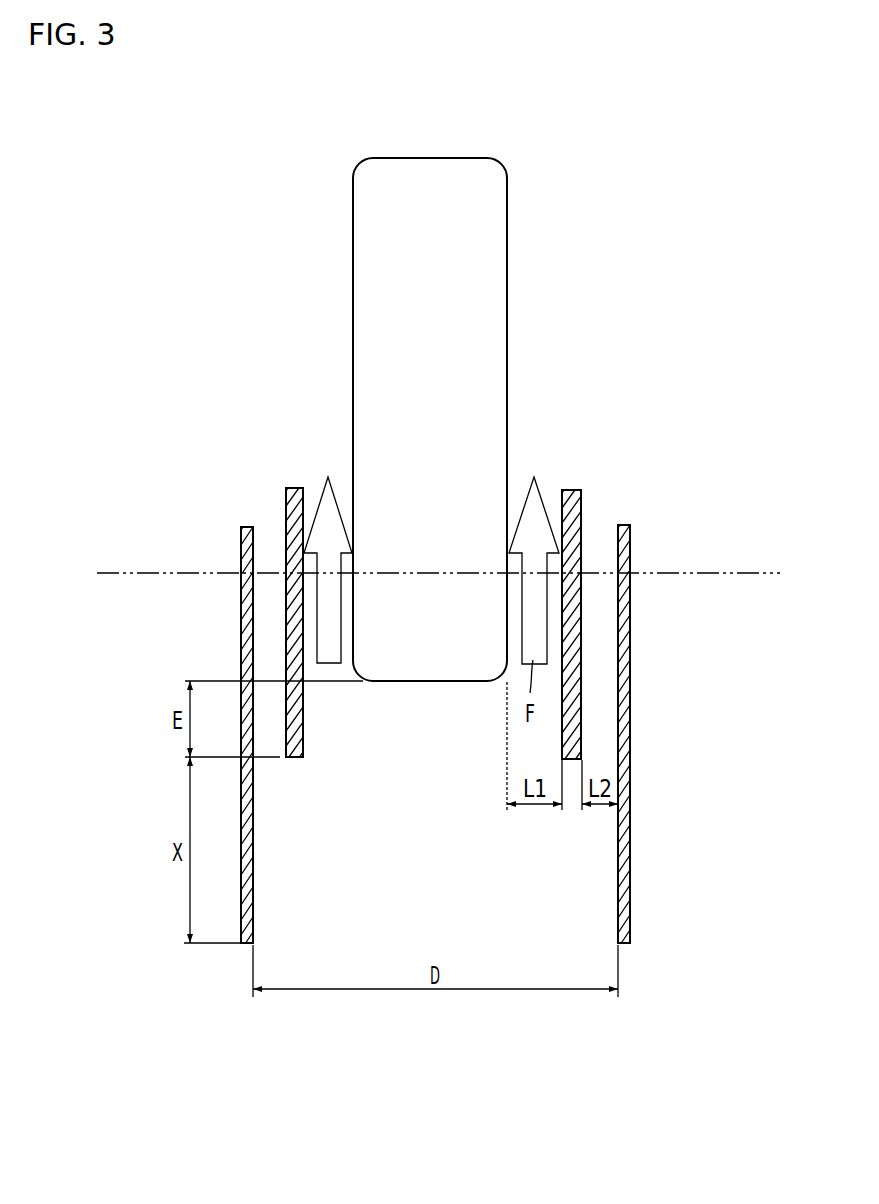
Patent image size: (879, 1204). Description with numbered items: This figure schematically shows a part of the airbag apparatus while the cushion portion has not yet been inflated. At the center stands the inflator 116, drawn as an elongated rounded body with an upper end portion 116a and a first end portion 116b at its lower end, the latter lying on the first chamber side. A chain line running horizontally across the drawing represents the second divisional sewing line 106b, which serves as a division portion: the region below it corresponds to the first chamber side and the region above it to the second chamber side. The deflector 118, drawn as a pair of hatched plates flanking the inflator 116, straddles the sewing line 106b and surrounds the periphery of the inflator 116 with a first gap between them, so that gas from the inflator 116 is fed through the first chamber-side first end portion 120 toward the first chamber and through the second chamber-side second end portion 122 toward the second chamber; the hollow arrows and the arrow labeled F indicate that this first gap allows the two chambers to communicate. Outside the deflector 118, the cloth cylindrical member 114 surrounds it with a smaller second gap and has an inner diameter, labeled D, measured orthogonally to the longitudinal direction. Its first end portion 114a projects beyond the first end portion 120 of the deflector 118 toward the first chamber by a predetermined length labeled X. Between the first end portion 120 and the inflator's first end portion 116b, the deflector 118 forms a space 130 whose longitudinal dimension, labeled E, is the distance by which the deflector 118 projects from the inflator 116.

The second divisional sewing line 106b is at (707, 573).
The cylindrical member 114 is at (241, 621).
The first end portion of the cylindrical member 114a is at (248, 947).
The inflator 116 is at (492, 302).
The end portion of the inflator 116a is at (430, 158).
The first end portion of the inflator 116b is at (435, 682).
The deflector 118 is at (286, 497).
The first end portion of the deflector 120 is at (295, 758).
The second end portion of the deflector 122 is at (295, 488).
The space 130 is at (345, 712).